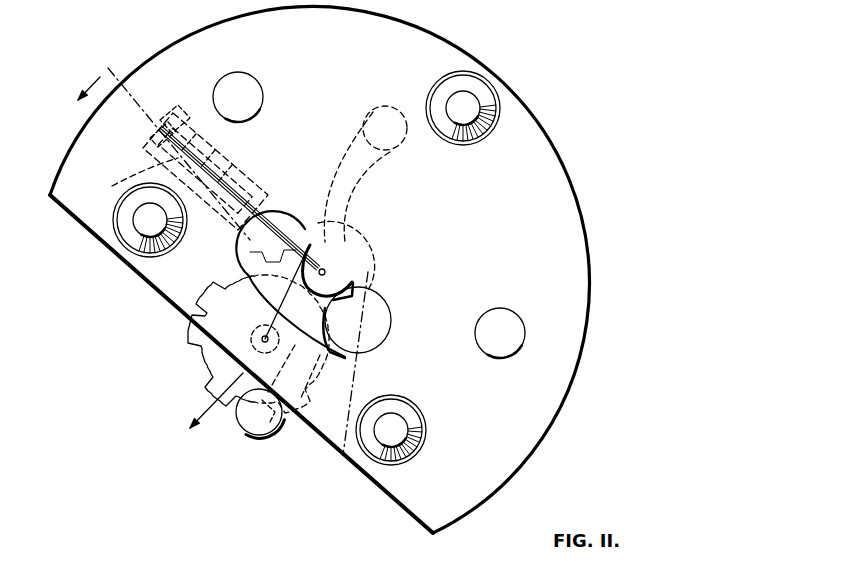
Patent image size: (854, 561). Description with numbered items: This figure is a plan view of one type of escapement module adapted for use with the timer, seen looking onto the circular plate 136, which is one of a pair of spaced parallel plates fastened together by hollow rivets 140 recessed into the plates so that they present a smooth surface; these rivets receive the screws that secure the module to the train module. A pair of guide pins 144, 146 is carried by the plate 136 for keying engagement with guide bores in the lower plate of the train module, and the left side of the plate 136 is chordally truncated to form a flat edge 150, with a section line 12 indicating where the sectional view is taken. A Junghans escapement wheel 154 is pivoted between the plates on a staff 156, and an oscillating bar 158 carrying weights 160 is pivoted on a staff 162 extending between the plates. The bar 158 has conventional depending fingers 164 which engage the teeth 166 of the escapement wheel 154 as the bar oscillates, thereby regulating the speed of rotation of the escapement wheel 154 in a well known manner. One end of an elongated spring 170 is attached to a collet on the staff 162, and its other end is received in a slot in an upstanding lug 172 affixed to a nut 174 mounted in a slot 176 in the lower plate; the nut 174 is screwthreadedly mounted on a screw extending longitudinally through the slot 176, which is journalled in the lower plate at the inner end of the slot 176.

The section line 12 is at (152, 267).
The plate 136 is at (583, 248).
The hollow rivets 140 is at (478, 132).
The guide pin 144 is at (256, 78).
The guide pin 146 is at (520, 356).
The flat edge 150 is at (58, 210).
The escapement wheel 154 is at (210, 377).
The staff 156 is at (260, 339).
The oscillating bar 158 is at (287, 420).
The weights 160 is at (381, 115).
The staff 162 is at (326, 271).
The depending fingers 164 is at (388, 327).
The teeth 166 is at (345, 460).
The spring 170 is at (308, 222).
The lug 172 is at (212, 129).
The nut 174 is at (127, 179).
The slot 176 is at (248, 173).